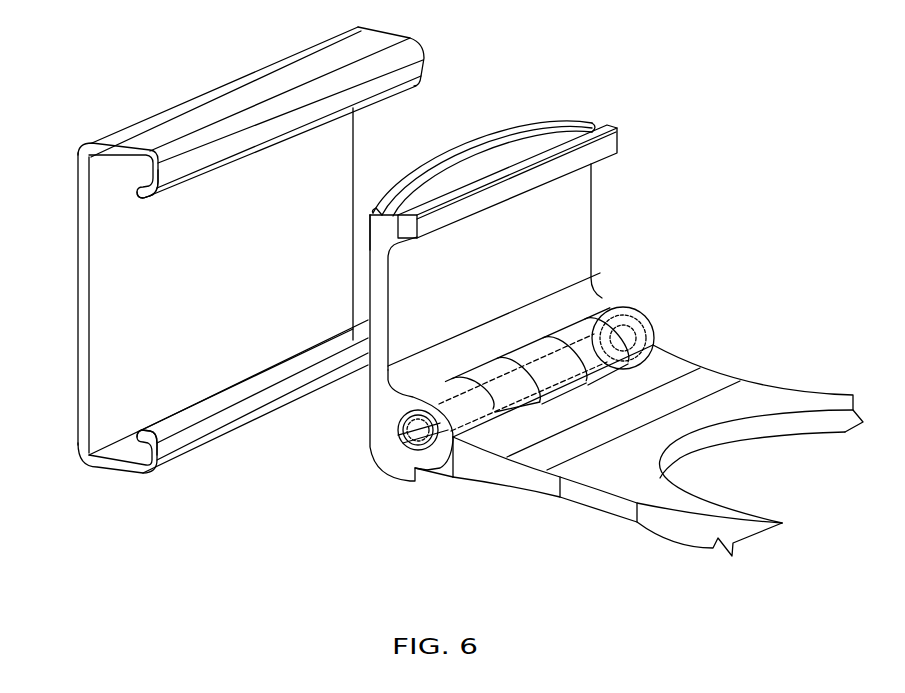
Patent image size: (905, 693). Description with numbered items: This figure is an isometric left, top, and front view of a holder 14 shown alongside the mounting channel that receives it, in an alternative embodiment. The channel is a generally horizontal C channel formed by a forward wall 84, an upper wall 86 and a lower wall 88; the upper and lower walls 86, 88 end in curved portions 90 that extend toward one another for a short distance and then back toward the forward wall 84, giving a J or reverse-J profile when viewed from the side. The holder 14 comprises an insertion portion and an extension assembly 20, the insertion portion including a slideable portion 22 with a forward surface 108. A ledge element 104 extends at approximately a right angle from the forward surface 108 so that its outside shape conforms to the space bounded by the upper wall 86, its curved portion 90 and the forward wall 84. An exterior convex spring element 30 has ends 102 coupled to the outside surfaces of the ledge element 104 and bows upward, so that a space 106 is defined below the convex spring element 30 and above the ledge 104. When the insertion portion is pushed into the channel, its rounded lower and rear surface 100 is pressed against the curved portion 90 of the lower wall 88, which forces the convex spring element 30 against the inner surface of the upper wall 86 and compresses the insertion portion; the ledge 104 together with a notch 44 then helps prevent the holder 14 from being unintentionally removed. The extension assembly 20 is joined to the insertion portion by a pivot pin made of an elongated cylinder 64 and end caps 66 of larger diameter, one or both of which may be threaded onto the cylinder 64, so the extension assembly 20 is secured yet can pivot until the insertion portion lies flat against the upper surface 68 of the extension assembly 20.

The holder 14 is at (735, 260).
The extension assembly 20 is at (658, 443).
The slideable portion 22 is at (546, 263).
The convex spring element 30 is at (483, 145).
The notch 44 is at (427, 482).
The elongated cylinder 64 is at (587, 357).
The end caps 66 is at (633, 323).
The upper surface 68 is at (672, 367).
The forward wall 84 is at (216, 286).
The upper wall 86 is at (163, 137).
The lower wall 88 is at (172, 460).
The curved portions 90 is at (152, 193).
The rounded lower and rear surface 100 is at (385, 458).
The ends 102 is at (373, 223).
The ledge element 104 is at (378, 252).
The space 106 is at (498, 157).
The forward surface 108 is at (545, 225).